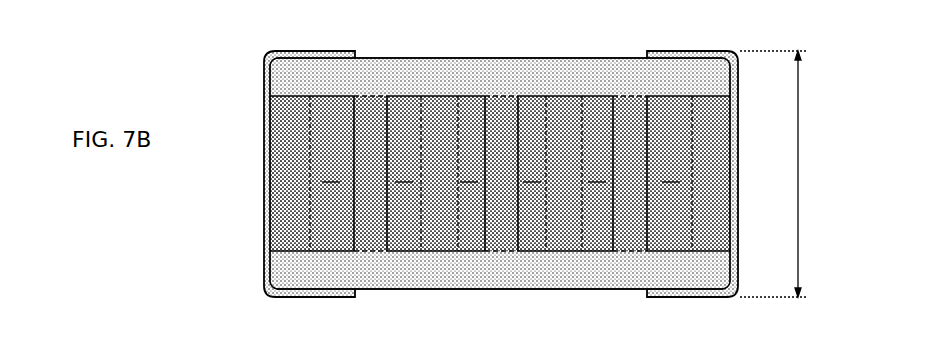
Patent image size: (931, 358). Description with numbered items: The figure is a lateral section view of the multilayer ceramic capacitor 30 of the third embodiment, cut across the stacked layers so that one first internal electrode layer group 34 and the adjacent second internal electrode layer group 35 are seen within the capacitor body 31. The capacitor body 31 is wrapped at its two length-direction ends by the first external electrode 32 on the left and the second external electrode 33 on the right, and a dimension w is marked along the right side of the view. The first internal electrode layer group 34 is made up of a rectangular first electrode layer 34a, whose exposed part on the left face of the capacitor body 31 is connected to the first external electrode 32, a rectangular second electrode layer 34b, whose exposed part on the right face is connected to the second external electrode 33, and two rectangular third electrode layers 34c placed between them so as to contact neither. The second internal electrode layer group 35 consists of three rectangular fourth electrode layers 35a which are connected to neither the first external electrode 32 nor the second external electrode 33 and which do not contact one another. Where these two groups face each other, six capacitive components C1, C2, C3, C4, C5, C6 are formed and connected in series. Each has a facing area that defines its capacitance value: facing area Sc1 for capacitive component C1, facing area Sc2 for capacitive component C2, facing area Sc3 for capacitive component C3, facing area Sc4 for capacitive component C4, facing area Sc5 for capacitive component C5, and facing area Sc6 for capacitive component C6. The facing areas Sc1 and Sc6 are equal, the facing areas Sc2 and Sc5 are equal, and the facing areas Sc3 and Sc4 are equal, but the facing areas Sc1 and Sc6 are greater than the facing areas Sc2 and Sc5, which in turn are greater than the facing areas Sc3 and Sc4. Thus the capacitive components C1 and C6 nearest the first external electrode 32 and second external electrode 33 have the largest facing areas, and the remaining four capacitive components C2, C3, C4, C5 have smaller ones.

The multilayer ceramic capacitor 30 is at (276, 53).
The capacitor body 31 is at (466, 57).
The first external electrode 32 is at (292, 51).
The second external electrode 33 is at (702, 51).
The first internal electrode layer group 34 is at (725, 150).
The first electrode layer 34a is at (297, 123).
The second electrode layer 34b is at (697, 118).
The third electrode layer 34c is at (433, 120).
The second internal electrode layer group 35 is at (703, 207).
The fourth electrode layer 35a is at (370, 120).
The capacitive component C1 is at (331, 174).
The capacitive component C2 is at (404, 174).
The capacitive component C3 is at (469, 174).
The capacitive component C4 is at (532, 174).
The capacitive component C5 is at (597, 174).
The capacitive component C6 is at (671, 174).
The facing area Sc1 is at (332, 235).
The facing area Sc2 is at (407, 233).
The facing area Sc3 is at (470, 233).
The facing area Sc4 is at (533, 233).
The facing area Sc5 is at (597, 233).
The facing area Sc6 is at (672, 233).
The width dimension w is at (777, 174).